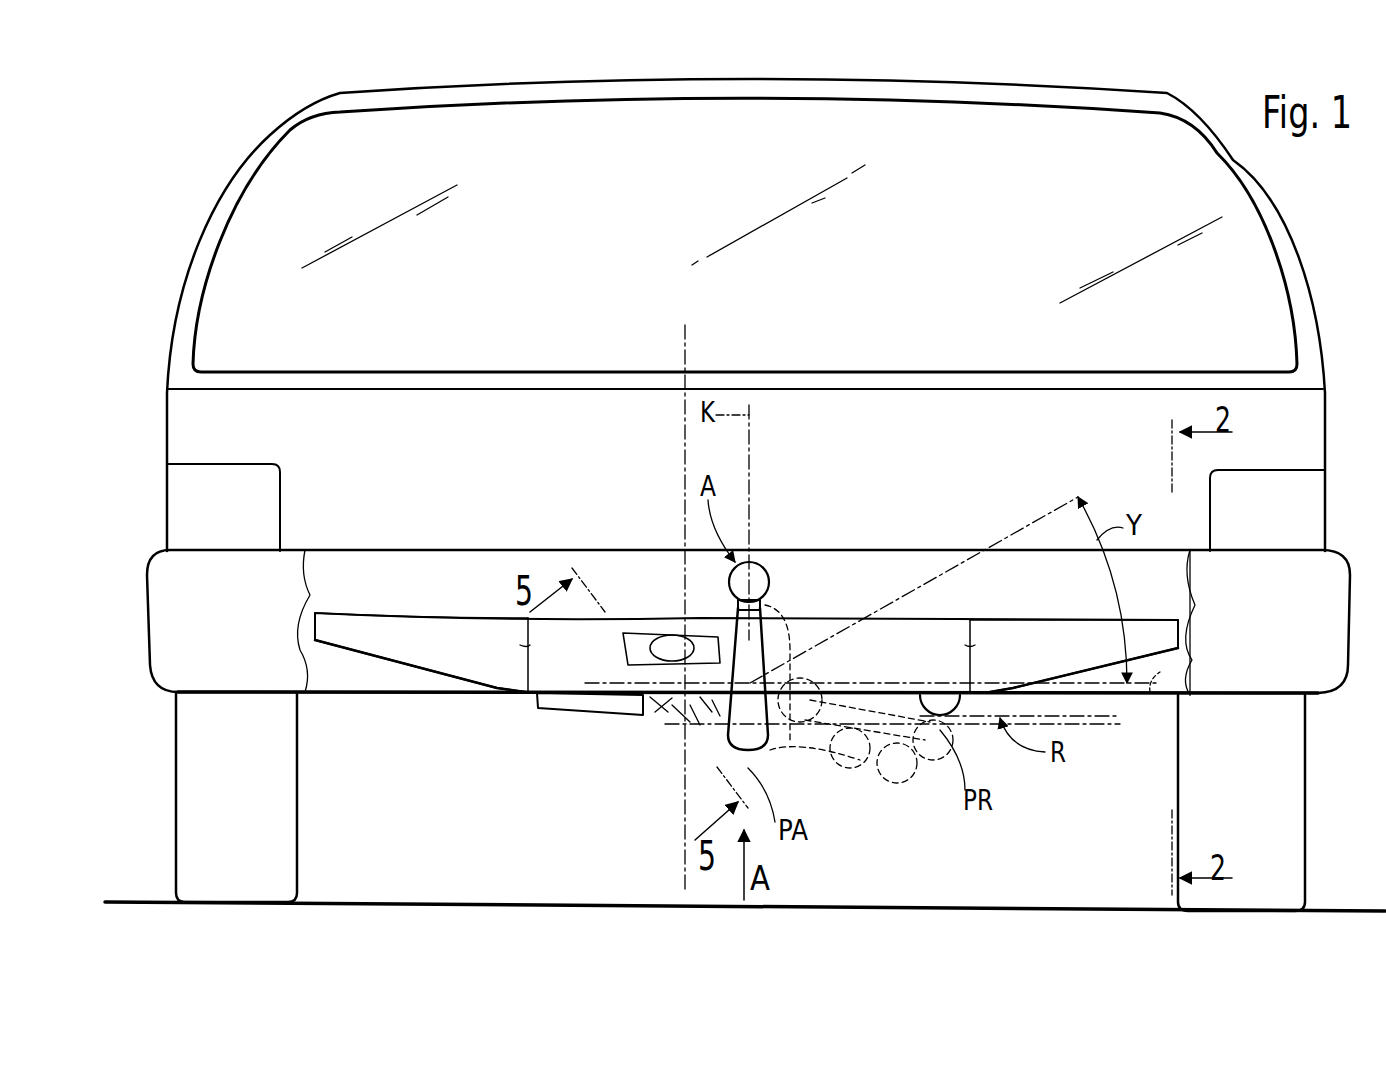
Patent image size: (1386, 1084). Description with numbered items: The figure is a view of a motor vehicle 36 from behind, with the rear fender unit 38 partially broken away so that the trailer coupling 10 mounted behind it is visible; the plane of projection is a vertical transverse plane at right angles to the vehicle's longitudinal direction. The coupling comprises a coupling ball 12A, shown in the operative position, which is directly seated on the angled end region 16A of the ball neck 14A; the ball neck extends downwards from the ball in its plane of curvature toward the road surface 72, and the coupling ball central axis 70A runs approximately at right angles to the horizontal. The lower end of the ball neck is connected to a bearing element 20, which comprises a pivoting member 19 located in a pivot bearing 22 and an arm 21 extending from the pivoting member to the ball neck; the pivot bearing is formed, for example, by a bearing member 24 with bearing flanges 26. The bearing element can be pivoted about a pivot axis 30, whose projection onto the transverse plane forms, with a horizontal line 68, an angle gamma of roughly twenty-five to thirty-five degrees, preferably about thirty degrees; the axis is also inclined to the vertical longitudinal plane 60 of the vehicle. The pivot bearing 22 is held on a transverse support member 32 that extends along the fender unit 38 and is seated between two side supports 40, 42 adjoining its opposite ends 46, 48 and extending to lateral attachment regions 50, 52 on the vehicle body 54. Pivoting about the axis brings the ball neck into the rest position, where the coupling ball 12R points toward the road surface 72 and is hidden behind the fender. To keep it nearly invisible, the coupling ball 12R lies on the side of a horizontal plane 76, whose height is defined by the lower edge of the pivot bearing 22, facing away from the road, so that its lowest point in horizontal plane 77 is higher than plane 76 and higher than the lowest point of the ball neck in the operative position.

The trailer coupling 10 is at (760, 643).
The coupling ball in operative position 12A is at (755, 573).
The coupling ball in rest position 12R is at (960, 700).
The ball neck in operative position 14A is at (762, 750).
The angled end region of ball neck in operative position 16A is at (740, 610).
The pivoting member 19 is at (705, 732).
The bearing element 20 is at (708, 690).
The arm 21 is at (715, 735).
The pivot bearing 22 is at (655, 715).
The bearing member 24 is at (680, 728).
The bearing flange 26 is at (700, 728).
The pivot axis 30 is at (1050, 510).
The transverse support member 32 is at (932, 627).
The motor vehicle 36 is at (1250, 262).
The rear fender unit 38 is at (748, 622).
The side support 40 is at (410, 612).
The side support 42 is at (1063, 620).
The end of transverse support member 46 is at (520, 645).
The end of transverse support member 48 is at (970, 645).
The lateral attachment region 50 is at (325, 628).
The lateral attachment region 52 is at (1172, 628).
The vehicle body 54 is at (1200, 622).
The vertical longitudinal plane 60 is at (685, 340).
The horizontal line 68 is at (1160, 672).
The coupling ball central axis in operative position 70A is at (752, 494).
The road surface 72 is at (1058, 908).
The horizontal plane 76 is at (1118, 728).
The horizontal plane 77 is at (1122, 716).